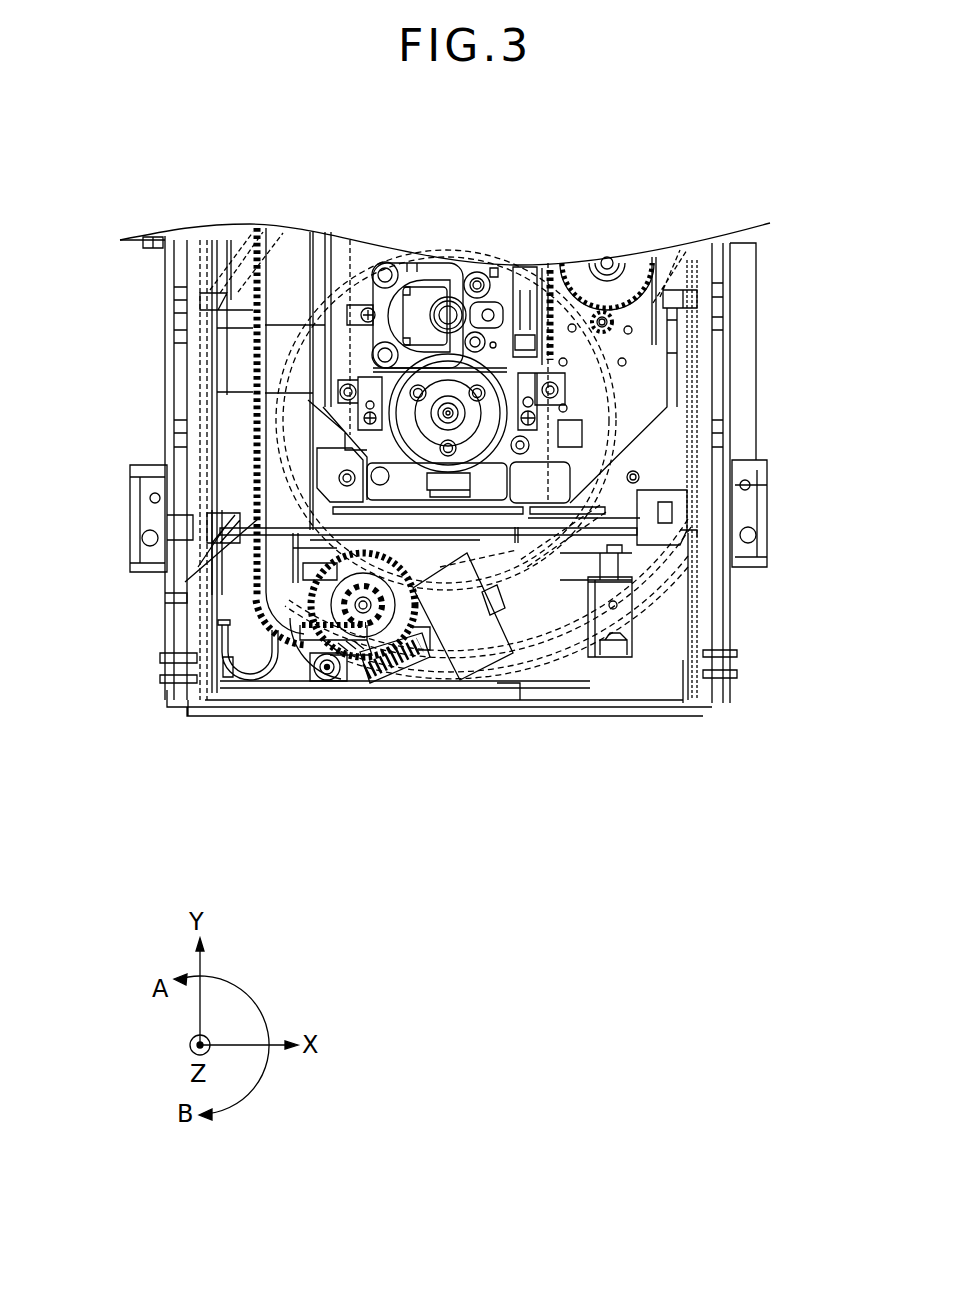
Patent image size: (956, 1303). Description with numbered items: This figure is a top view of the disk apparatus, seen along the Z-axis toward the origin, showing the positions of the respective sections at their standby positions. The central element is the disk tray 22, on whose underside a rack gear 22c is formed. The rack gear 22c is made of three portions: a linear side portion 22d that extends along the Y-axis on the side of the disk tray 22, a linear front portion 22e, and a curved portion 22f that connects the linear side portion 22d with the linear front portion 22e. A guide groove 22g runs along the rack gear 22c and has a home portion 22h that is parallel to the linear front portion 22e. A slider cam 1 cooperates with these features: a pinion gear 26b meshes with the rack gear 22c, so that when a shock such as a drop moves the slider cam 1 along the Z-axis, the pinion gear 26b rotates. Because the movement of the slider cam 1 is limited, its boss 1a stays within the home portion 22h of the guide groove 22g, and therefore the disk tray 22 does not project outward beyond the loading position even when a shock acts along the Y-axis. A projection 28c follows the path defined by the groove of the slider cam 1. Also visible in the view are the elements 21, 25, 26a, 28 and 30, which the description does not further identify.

The slider cam 1 is at (600, 657).
The boss 1a is at (340, 681).
The chassis 21 is at (733, 297).
The disk tray 22 is at (247, 715).
The rack gear 22c is at (185, 582).
The linear side portion 22d is at (252, 468).
The linear front portion 22e is at (295, 623).
The curved portion 22f is at (293, 590).
The guide groove 22g is at (243, 627).
The home portion 22h is at (300, 683).
The pivot arm 25 is at (480, 637).
The drive gear 26a is at (398, 613).
The pinion gear 26b is at (375, 630).
The tray holder 28 is at (657, 433).
The projection 28c is at (573, 668).
The base plate 30 is at (637, 383).